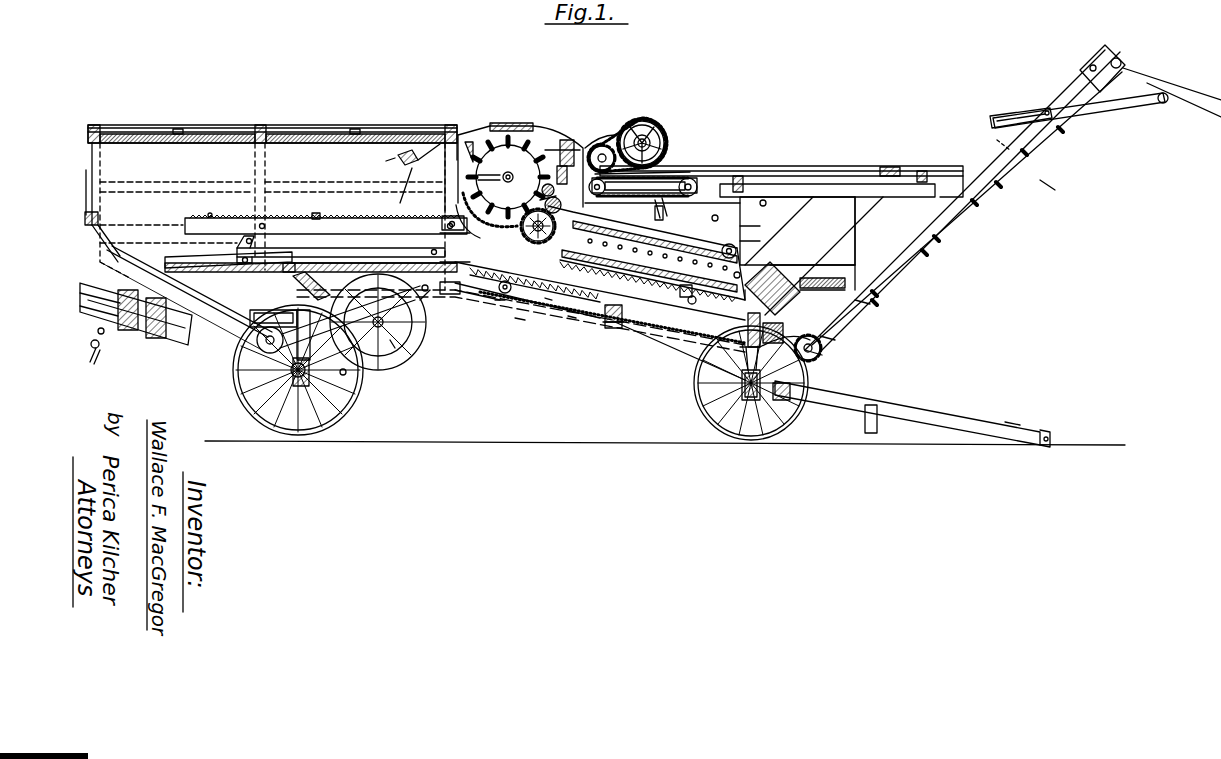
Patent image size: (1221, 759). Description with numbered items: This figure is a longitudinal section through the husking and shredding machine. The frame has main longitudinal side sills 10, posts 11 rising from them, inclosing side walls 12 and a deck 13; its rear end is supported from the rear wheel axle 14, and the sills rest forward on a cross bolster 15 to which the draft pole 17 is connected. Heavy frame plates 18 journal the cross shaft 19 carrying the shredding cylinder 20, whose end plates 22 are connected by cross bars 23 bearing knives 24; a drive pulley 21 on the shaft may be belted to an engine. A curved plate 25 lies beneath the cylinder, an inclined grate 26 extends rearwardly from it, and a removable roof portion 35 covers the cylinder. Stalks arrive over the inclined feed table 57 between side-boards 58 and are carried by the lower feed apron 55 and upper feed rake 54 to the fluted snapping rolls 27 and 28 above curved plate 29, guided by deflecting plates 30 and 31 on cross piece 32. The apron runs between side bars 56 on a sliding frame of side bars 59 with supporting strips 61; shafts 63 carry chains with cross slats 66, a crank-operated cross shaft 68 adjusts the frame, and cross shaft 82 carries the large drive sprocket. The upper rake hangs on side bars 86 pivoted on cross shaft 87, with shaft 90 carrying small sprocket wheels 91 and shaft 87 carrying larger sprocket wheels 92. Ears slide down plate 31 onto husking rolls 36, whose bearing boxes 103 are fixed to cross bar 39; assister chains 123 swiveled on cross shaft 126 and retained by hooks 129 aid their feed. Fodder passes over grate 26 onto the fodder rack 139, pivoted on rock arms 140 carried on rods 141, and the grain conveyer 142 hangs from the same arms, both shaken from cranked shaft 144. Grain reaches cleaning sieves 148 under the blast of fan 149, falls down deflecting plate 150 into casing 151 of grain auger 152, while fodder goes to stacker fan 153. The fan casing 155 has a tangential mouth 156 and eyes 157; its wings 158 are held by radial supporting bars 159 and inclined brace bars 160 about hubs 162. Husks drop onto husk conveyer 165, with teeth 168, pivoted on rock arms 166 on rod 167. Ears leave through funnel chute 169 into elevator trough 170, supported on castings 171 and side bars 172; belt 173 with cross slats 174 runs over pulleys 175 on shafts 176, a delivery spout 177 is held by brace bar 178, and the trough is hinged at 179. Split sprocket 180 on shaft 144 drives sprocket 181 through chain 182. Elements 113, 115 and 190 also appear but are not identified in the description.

The main longitudinal side sills 10 is at (470, 300).
The posts 11 is at (290, 126).
The inclosing side walls 12 is at (312, 178).
The deck 13 is at (370, 135).
The rear wheel axle 14 is at (300, 410).
The cross bolster 15 is at (742, 332).
The draft pole 17 is at (898, 412).
The frame plates 18 is at (468, 142).
The cross shaft 19 is at (415, 165).
The shredding cylinder 20 is at (500, 140).
The drive pulley 21 is at (540, 272).
The end plates or heads 22 is at (410, 192).
The cross bars 23 is at (512, 145).
The knives 24 is at (538, 226).
The curved plate 25 is at (520, 247).
The inclined grate 26 is at (470, 212).
The fluted snapping roll 27 is at (568, 140).
The fluted snapping roll 28 is at (560, 200).
The curved plate 29 is at (530, 150).
The deflecting plate 30 is at (598, 122).
The deflecting plate 31 is at (660, 233).
The cross piece 32 is at (580, 145).
The roof or deck portion 35 is at (560, 138).
The husking roll 36 is at (652, 287).
The front cross bar 39 is at (800, 298).
The upper feed rake 54 is at (648, 122).
The lower feed apron 55 is at (695, 202).
The longitudinal side bars 56 is at (790, 186).
The inclined feed table 57 is at (740, 167).
The side-boards 58 is at (770, 165).
The side bars 59 is at (700, 207).
The supporting strips 61 is at (672, 195).
The shafts 63 is at (692, 172).
The cross slats 66 is at (672, 180).
The cross shaft 68 is at (770, 206).
The cross shaft 82 is at (780, 216).
The side bars 86 is at (614, 146).
The cross shaft 87 is at (652, 135).
The shaft 90 is at (586, 242).
The small sprocket wheels 91 is at (662, 160).
The sprocket wheels 92 is at (668, 150).
The bearing boxes 103 is at (772, 288).
The bearing 113 is at (480, 288).
The brace 115 is at (520, 320).
The feed chains or assisters 123 is at (750, 226).
The cross shaft 126 is at (806, 252).
The hook 129 is at (748, 241).
The fodder rack 139 is at (312, 224).
The rock arms 140 is at (341, 248).
The cross supporting rods 141 is at (370, 248).
The grain conveyer 142 is at (350, 263).
The cranked shaft 144 is at (500, 302).
The cleaning sieves 148 is at (192, 258).
The fan 149 is at (402, 350).
The inclined deflecting plate 150 is at (222, 302).
The casing 151 is at (248, 340).
The grain auger 152 is at (270, 352).
The fan 153 is at (152, 332).
The fan casing 155 is at (392, 346).
The mouth portion 156 is at (300, 312).
The air inlet openings or eyes 157 is at (446, 290).
The wings 158 is at (290, 340).
The supporting bars 159 is at (405, 402).
The inclined brace bar 160 is at (400, 296).
The hubs 162 is at (372, 328).
The husk conveyer 165 is at (614, 324).
The rock arms 166 is at (690, 302).
The cross supporting rod 167 is at (682, 352).
The teeth 168 is at (640, 256).
The chute 169 is at (862, 302).
The trough 170 is at (900, 252).
The brackets or castings 171 is at (828, 338).
The side bars 172 is at (822, 186).
The endless conveyer belt 173 is at (990, 262).
The cross slats 174 is at (1000, 215).
The pulleys 175 is at (1108, 58).
The shafts 176 is at (1122, 63).
The delivery spout 177 is at (1176, 113).
The brace bar 178 is at (1110, 106).
The hinge 179 is at (997, 138).
The split sprocket wheel 180 is at (548, 300).
The sprocket wheel 181 is at (822, 356).
The drive chain 182 is at (572, 318).
The bar 190 is at (448, 244).